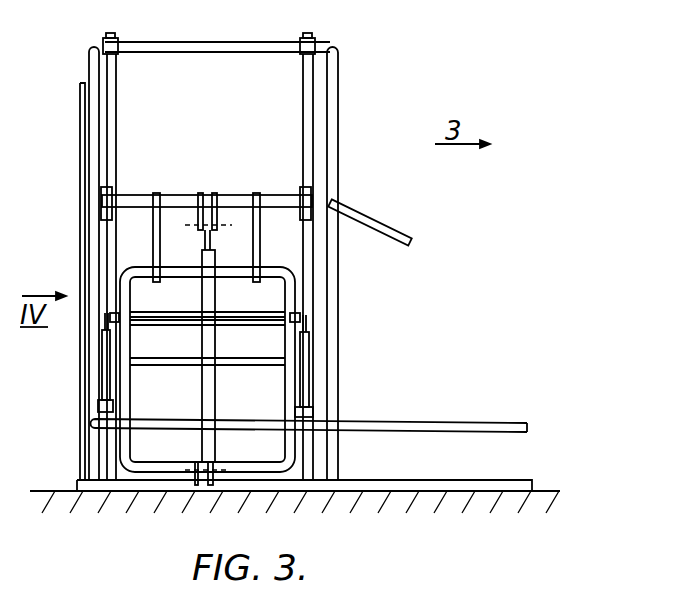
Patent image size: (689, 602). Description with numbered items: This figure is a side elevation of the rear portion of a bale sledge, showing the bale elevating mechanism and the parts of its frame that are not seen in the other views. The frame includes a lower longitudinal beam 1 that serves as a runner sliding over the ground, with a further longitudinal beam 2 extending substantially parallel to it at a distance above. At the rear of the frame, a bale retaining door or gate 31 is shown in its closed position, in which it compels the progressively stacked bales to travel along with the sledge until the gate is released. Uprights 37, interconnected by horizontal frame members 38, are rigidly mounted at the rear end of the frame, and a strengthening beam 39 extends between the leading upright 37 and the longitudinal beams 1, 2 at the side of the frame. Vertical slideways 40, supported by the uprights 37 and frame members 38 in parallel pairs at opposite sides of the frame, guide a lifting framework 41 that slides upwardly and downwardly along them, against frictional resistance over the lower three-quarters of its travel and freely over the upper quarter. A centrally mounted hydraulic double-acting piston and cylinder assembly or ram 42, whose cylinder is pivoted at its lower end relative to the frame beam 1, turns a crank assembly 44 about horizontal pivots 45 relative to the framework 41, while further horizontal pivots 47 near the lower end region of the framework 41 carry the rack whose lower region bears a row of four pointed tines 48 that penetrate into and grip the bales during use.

The longitudinal beam 1 is at (408, 482).
The further longitudinal beam 2 is at (406, 424).
The bale retaining door or gate 31 is at (82, 387).
The upright 37 is at (90, 58).
The horizontal frame member 38 is at (230, 50).
The strengthening beam 39 is at (392, 228).
The vertical slideway 40 is at (122, 112).
The framework 41 is at (116, 250).
The hydraulic double-acting piston and cylinder assembly or ram 42 is at (206, 252).
The crank assembly 44 is at (177, 196).
The horizontal pivot 45 is at (103, 203).
The horizontal pivot 47 is at (103, 365).
The pointed tine 48 is at (184, 466).